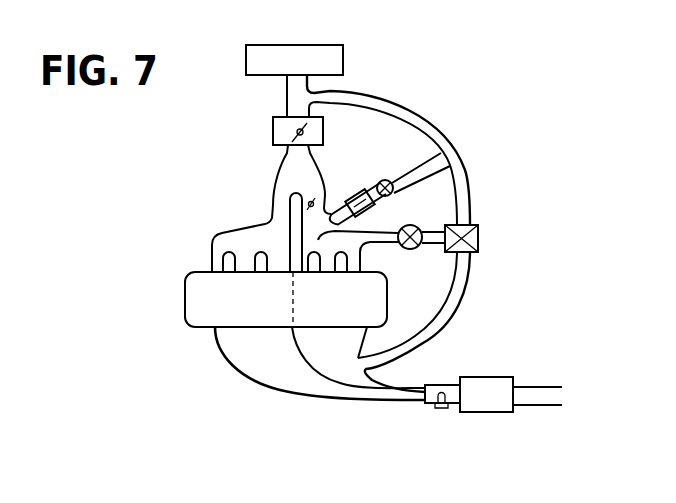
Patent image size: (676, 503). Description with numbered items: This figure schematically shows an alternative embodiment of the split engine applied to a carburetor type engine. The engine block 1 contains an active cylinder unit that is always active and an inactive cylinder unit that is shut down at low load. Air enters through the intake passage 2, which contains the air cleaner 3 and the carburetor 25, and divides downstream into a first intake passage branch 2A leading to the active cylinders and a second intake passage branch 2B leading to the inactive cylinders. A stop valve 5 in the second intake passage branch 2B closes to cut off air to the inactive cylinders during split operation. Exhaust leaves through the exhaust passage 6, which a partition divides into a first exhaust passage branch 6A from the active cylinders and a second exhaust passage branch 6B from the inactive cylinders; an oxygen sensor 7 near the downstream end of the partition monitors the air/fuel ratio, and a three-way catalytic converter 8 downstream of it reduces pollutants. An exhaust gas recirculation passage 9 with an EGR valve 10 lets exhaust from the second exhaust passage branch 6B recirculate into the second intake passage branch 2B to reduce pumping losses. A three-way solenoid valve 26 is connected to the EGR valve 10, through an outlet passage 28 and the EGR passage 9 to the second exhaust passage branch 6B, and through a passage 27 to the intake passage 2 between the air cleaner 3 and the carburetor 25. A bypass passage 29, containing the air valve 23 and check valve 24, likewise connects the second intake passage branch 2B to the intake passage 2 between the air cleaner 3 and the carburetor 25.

The engine block 1 is at (185, 316).
The intake passage 2 is at (212, 244).
The first intake passage branch 2A is at (265, 232).
The second intake passage branch 2B is at (350, 228).
The air cleaner 3 is at (343, 57).
The stop valve 5 is at (312, 198).
The exhaust passage 6 is at (238, 375).
The first exhaust passage branch 6A is at (290, 383).
The second exhaust passage branch 6B is at (338, 365).
The oxygen sensor 7 is at (442, 408).
The three-way catalytic converter 8 is at (493, 412).
The exhaust gas recirculation passage 9 is at (460, 291).
The EGR valve 10 is at (412, 249).
The air valve 23 is at (387, 180).
The check valve 24 is at (358, 188).
The carburetor 25 is at (273, 130).
The three-way solenoid valve 26 is at (478, 236).
The passage 27 is at (452, 152).
The outlet passage 28 is at (432, 230).
The bypass passage 29 is at (422, 170).